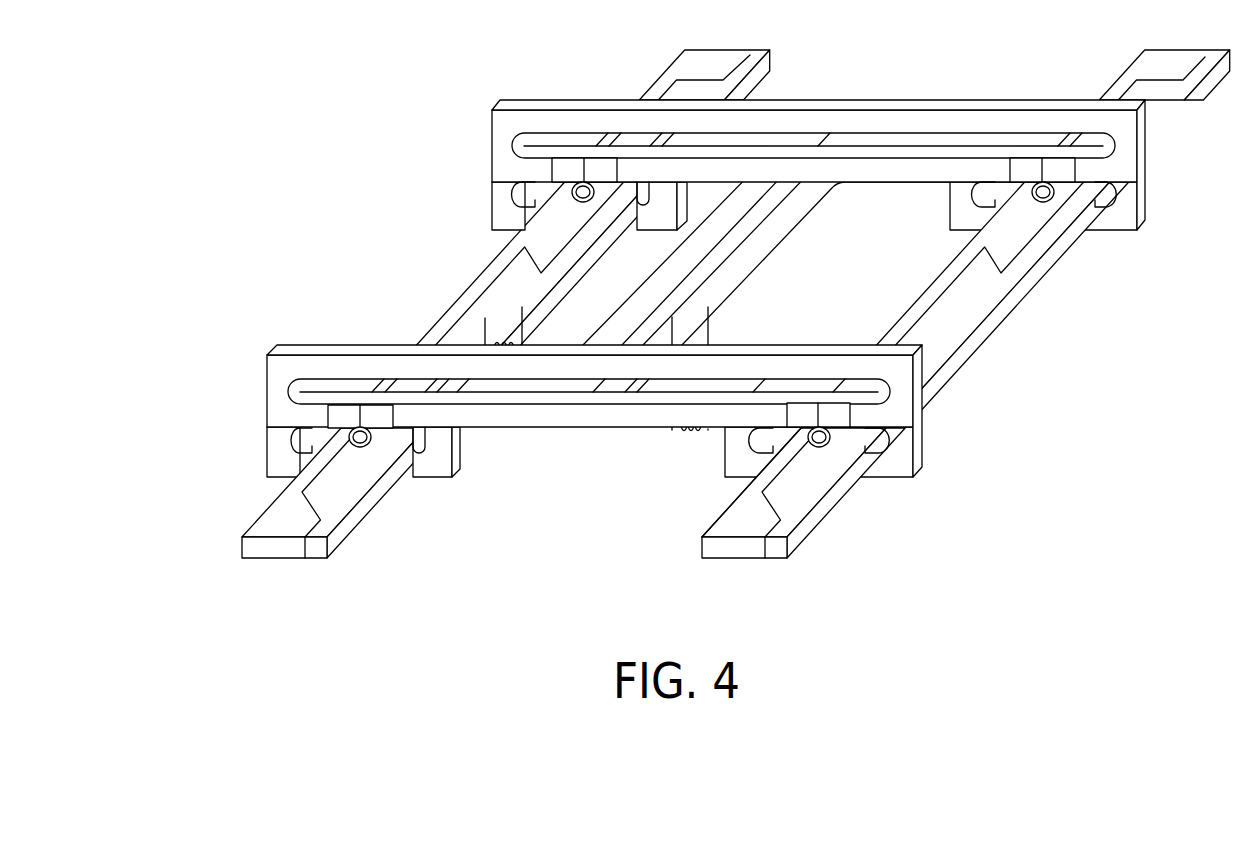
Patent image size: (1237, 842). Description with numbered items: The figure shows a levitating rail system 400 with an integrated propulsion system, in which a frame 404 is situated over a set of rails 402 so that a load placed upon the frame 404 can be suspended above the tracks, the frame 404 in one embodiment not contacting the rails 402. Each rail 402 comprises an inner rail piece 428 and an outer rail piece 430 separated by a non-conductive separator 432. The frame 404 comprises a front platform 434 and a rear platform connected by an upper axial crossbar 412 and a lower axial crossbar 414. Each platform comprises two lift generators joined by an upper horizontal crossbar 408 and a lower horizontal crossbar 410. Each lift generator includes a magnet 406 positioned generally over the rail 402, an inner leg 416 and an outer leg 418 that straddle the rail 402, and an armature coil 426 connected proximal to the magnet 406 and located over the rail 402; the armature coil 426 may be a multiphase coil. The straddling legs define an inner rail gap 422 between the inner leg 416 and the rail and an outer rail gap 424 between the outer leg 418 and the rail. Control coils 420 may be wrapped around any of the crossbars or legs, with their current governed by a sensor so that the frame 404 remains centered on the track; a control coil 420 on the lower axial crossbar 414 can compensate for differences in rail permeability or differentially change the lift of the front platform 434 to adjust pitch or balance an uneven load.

The levitating rail system 400 is at (250, 119).
The rail 402 is at (258, 525).
The frame 404 is at (591, 437).
The magnet 406 is at (358, 403).
The upper horizontal crossbar 408 is at (322, 346).
The lower horizontal crossbar 410 is at (562, 430).
The upper axial crossbar 412 is at (653, 273).
The lower axial crossbar 414 is at (758, 262).
The inner leg 416 is at (447, 478).
The outer leg 418 is at (267, 441).
The control coil 420 is at (525, 336).
The inner rail gap 422 is at (757, 441).
The outer rail gap 424 is at (868, 485).
The armature coil 426 is at (820, 450).
The inner rail piece 428 is at (795, 501).
The outer rail piece 430 is at (797, 508).
The non-conductive separator 432 is at (777, 523).
The front platform 434 is at (922, 461).